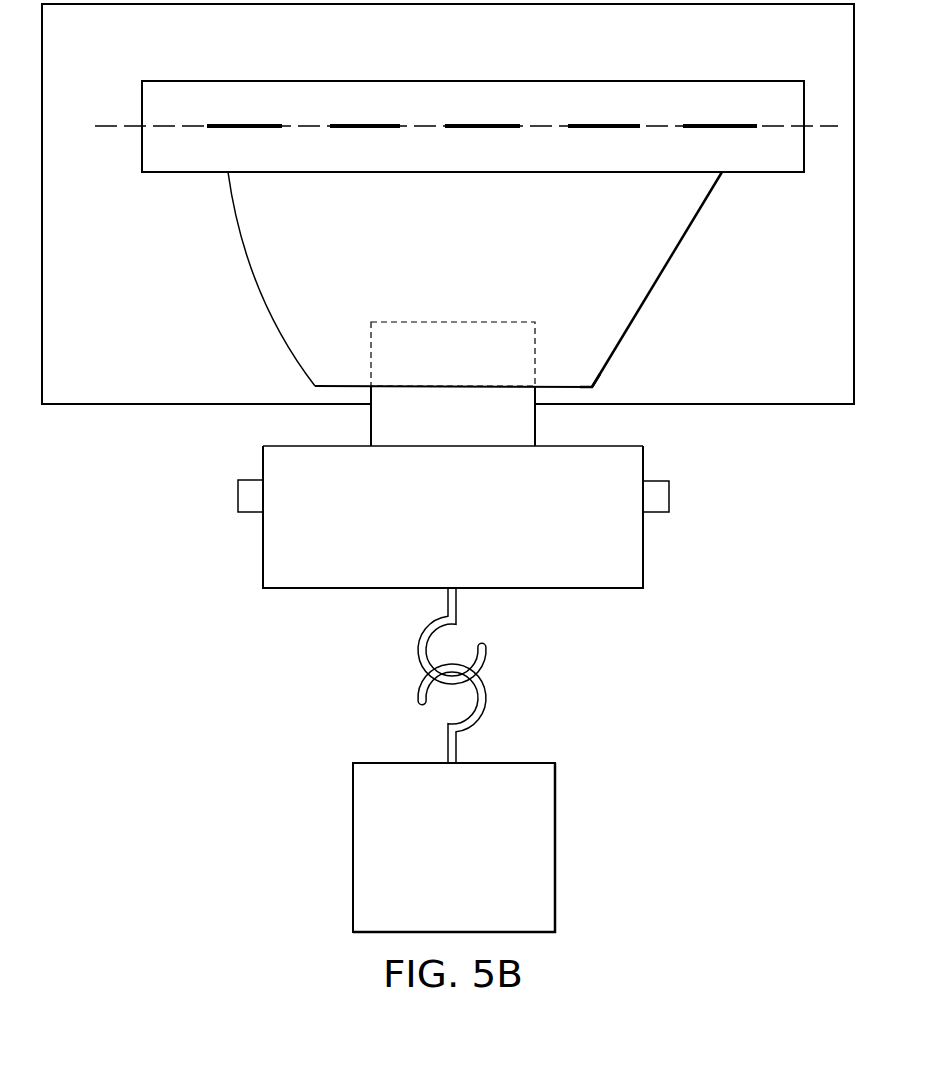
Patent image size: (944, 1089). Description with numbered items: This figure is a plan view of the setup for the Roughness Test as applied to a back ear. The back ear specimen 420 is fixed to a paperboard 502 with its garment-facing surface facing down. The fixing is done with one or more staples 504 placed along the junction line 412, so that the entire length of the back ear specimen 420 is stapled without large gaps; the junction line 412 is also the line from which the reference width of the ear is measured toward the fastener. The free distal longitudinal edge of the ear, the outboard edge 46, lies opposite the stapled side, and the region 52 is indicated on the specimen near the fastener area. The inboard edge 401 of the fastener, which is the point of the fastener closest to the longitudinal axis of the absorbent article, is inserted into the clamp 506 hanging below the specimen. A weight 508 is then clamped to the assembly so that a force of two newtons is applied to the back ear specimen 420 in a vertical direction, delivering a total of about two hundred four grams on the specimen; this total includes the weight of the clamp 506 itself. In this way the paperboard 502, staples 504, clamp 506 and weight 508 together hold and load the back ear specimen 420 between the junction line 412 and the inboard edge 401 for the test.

The junction line 412 is at (110, 125).
The staples 504 is at (602, 126).
The light engine region 52 is at (455, 318).
The back ear specimen 420 is at (688, 302).
The outboard edge 46 is at (583, 389).
The inboard edge of the fastener 401 is at (452, 444).
The paperboard 502 is at (743, 395).
The clamp 506 is at (272, 550).
The weight 508 is at (350, 845).